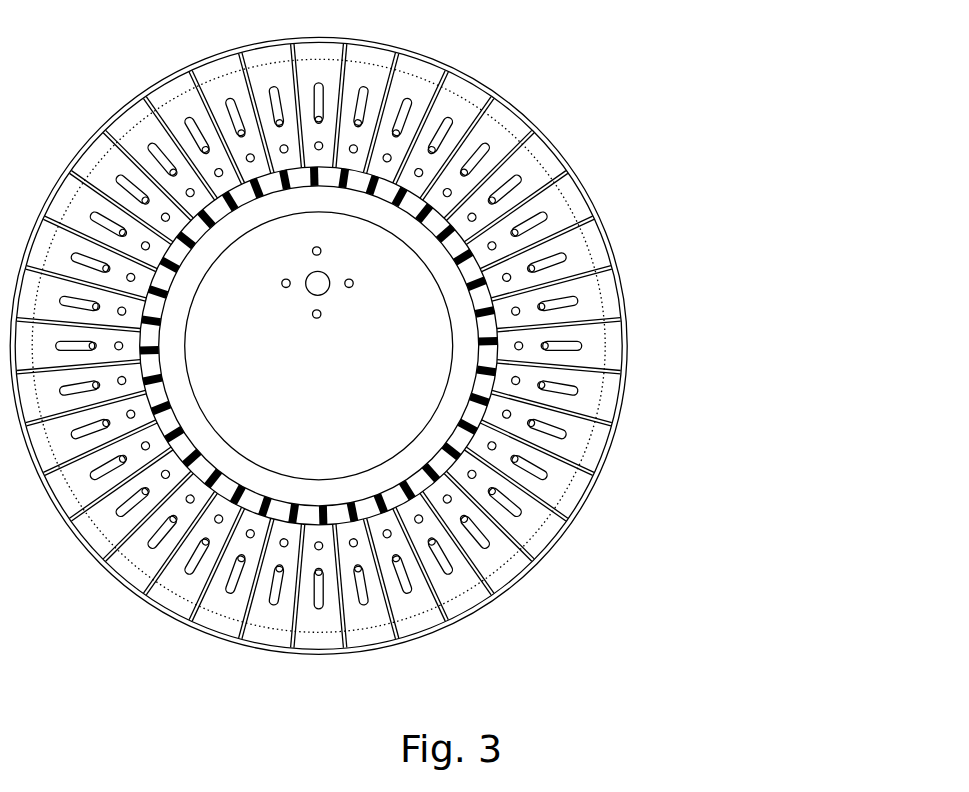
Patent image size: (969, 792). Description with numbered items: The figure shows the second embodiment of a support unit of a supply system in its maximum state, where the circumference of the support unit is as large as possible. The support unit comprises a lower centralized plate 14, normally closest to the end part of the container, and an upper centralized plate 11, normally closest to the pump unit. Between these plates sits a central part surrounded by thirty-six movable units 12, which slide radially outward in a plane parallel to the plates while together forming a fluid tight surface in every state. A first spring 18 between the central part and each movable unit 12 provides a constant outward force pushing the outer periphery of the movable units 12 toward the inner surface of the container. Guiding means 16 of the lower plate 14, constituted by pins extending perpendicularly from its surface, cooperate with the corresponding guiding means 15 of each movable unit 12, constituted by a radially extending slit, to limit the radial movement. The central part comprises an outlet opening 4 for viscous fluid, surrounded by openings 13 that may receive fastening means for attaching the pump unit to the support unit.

The movable unit 12 is at (555, 150).
The lower centralized plate 14 is at (98, 528).
The guiding means of the movable unit 15 is at (527, 570).
The guiding means of the lower plate 16 is at (462, 521).
The first spring 18 is at (380, 498).
The upper centralized plate 11 is at (319, 346).
The outlet opening 4 is at (322, 288).
The openings 13 is at (312, 314).